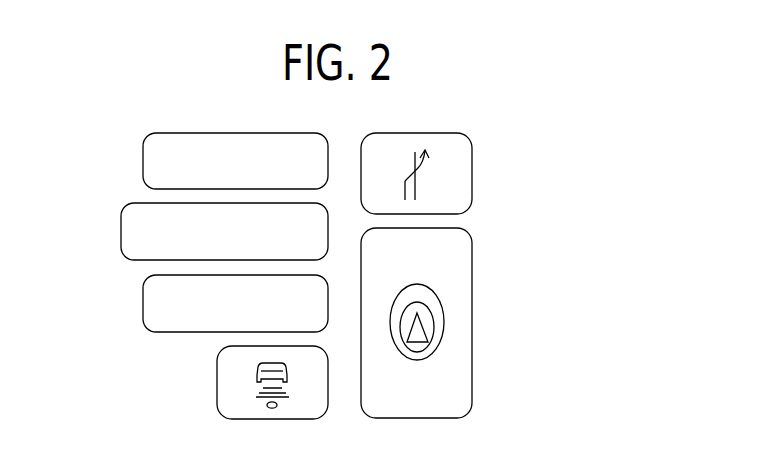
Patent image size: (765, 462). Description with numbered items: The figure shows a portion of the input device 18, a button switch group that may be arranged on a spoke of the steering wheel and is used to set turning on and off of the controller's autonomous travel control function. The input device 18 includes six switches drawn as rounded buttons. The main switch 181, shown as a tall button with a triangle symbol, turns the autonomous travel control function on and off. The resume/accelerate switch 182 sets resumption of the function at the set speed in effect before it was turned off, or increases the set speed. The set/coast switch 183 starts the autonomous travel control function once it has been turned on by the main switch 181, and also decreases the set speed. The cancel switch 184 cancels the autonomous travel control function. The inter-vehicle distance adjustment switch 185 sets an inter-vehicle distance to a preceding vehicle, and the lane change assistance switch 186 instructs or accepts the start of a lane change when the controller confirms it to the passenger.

The input device 18 is at (567, 187).
The main switch 181 is at (472, 272).
The resume/accelerate switch 182 is at (143, 162).
The set/coast switch 183 is at (143, 304).
The cancel switch 184 is at (121, 232).
The inter-vehicle distance adjustment switch 185 is at (217, 382).
The lane change assistance switch 186 is at (472, 160).